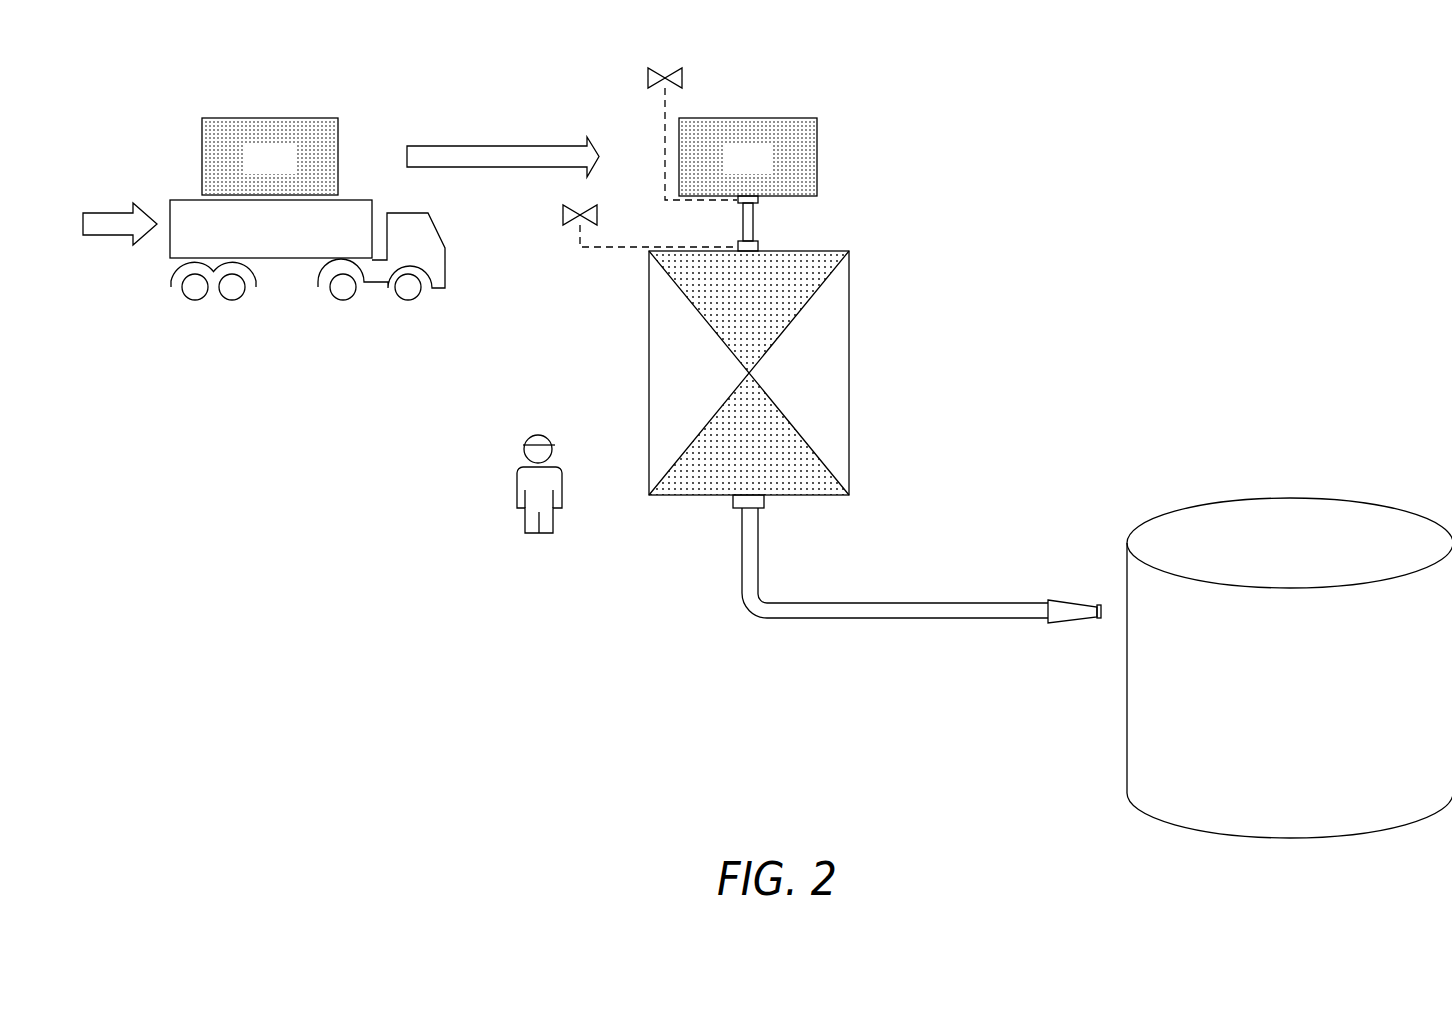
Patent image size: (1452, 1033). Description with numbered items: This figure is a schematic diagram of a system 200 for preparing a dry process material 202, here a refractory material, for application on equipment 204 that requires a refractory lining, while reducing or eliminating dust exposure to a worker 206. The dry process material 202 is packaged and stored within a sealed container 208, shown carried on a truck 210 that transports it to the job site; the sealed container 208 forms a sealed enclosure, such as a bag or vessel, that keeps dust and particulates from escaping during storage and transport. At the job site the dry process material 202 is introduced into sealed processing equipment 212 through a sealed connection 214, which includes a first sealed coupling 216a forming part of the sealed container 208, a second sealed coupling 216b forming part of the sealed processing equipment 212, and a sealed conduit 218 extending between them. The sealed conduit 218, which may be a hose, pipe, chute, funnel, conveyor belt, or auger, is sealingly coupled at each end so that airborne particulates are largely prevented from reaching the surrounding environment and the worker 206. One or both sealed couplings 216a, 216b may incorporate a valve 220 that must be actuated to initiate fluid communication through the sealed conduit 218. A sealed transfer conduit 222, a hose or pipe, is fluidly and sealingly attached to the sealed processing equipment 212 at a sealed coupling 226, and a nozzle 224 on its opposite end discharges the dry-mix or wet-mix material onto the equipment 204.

The system 200 is at (1052, 251).
The dry process material 202 is at (509, 157).
The equipment 204 is at (1289, 668).
The worker 206 is at (491, 465).
The sealed container 208 is at (298, 118).
The truck 210 is at (307, 260).
The sealed processing equipment 212 is at (860, 373).
The sealed connection 214 is at (730, 230).
The first sealed coupling 216a is at (758, 200).
The second sealed coupling 216b is at (758, 245).
The sealed conduit 218 is at (753, 230).
The valve 220 is at (682, 80).
The sealed transfer conduit 222 is at (892, 618).
The nozzle 224 is at (1072, 600).
The sealed coupling 226 is at (733, 505).